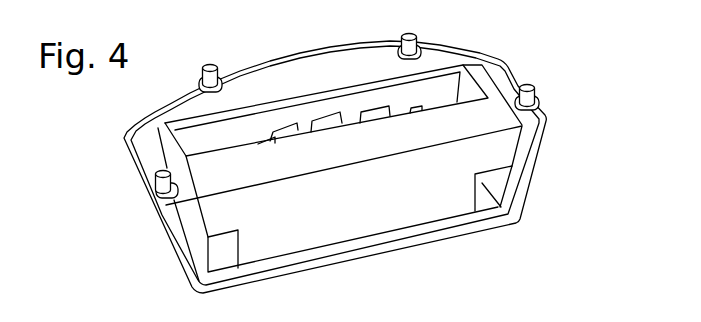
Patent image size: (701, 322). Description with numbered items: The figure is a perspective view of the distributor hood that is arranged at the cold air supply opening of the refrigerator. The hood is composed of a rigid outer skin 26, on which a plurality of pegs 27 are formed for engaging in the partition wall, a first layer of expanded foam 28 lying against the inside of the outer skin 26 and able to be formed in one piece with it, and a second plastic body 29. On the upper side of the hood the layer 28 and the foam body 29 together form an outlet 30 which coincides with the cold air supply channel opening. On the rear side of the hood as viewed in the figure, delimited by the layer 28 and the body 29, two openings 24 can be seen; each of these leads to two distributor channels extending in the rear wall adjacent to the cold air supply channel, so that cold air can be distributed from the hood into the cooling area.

The openings 24 is at (223, 250).
The outer skin 26 is at (497, 60).
The pegs 27 is at (408, 34).
The first layer of expanded foam 28 is at (147, 131).
The second plastic body 29 is at (490, 147).
The outlet 30 is at (436, 90).